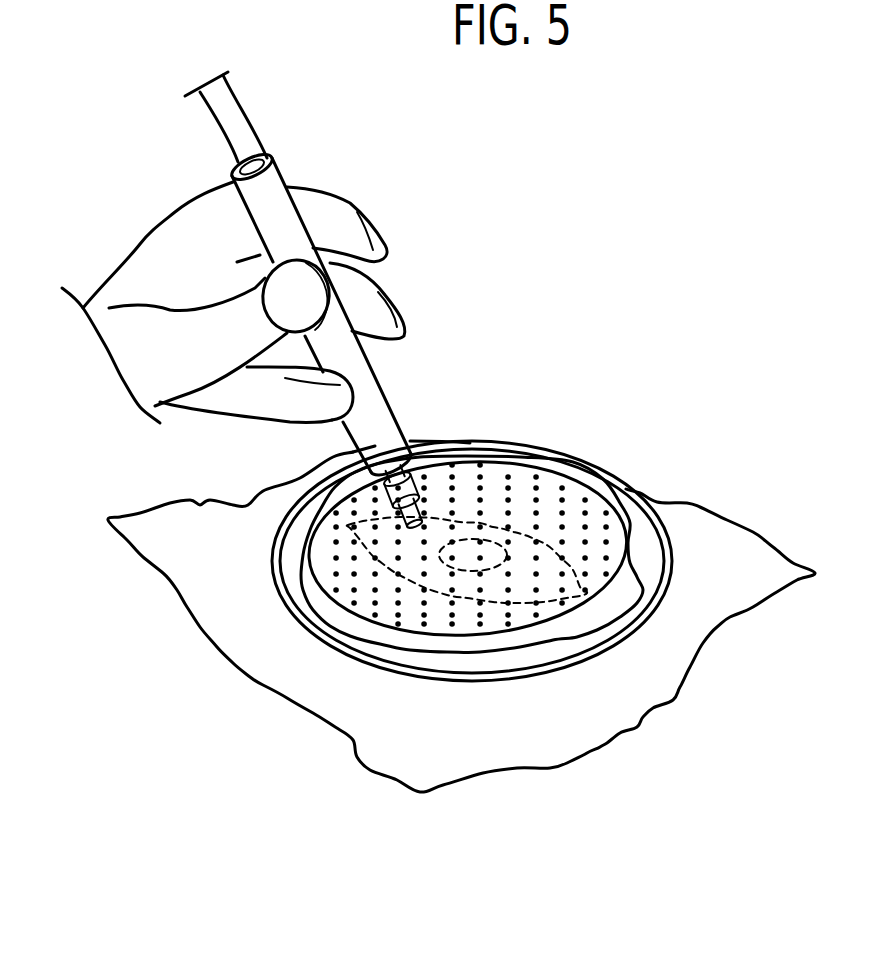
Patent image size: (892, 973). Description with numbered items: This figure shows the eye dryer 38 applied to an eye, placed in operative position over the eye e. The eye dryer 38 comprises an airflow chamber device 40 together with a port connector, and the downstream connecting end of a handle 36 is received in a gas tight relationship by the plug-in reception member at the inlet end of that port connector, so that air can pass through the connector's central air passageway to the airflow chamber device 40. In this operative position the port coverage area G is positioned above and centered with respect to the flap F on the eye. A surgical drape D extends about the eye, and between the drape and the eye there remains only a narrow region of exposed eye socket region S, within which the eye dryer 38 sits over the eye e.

The handle 36 is at (383, 407).
The eye dryer 38 is at (547, 489).
The airflow chamber device 40 is at (463, 628).
The exposed eye socket region S is at (367, 645).
The surgical drape D is at (545, 738).
The port coverage area G is at (582, 517).
The flap F is at (497, 535).
The eye e is at (378, 562).